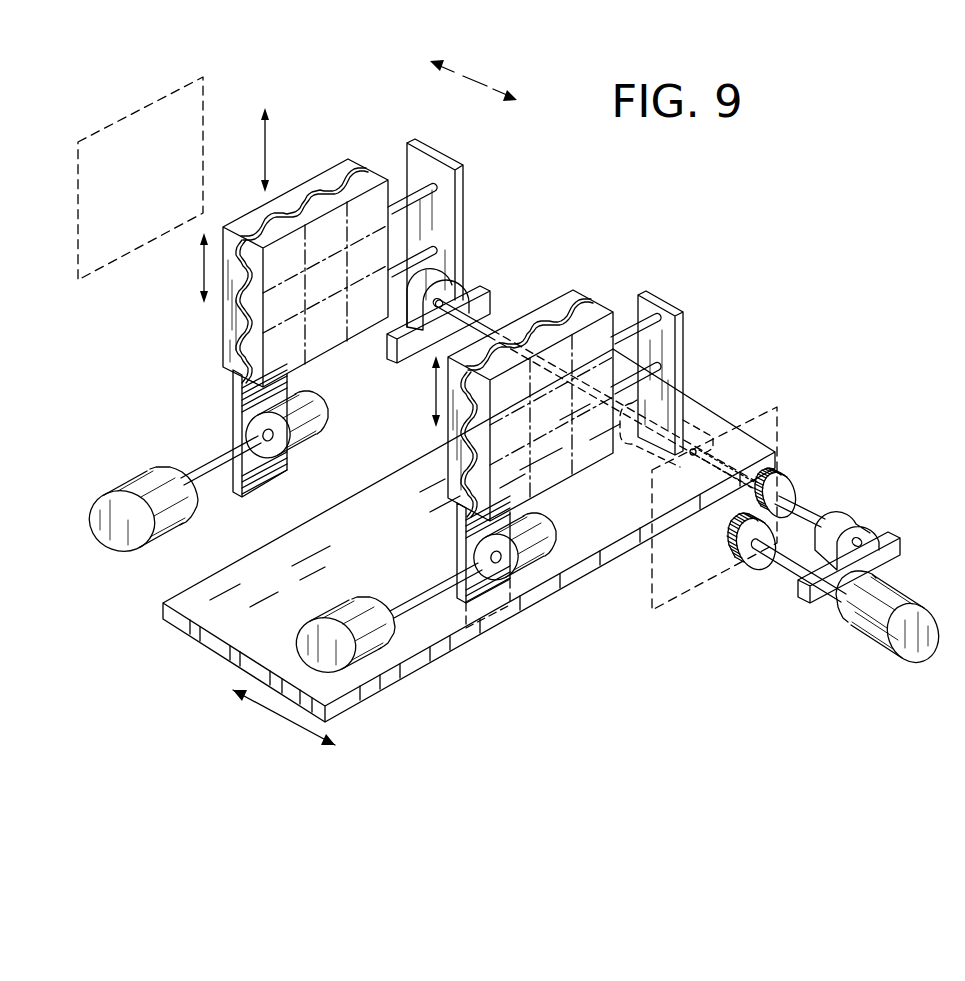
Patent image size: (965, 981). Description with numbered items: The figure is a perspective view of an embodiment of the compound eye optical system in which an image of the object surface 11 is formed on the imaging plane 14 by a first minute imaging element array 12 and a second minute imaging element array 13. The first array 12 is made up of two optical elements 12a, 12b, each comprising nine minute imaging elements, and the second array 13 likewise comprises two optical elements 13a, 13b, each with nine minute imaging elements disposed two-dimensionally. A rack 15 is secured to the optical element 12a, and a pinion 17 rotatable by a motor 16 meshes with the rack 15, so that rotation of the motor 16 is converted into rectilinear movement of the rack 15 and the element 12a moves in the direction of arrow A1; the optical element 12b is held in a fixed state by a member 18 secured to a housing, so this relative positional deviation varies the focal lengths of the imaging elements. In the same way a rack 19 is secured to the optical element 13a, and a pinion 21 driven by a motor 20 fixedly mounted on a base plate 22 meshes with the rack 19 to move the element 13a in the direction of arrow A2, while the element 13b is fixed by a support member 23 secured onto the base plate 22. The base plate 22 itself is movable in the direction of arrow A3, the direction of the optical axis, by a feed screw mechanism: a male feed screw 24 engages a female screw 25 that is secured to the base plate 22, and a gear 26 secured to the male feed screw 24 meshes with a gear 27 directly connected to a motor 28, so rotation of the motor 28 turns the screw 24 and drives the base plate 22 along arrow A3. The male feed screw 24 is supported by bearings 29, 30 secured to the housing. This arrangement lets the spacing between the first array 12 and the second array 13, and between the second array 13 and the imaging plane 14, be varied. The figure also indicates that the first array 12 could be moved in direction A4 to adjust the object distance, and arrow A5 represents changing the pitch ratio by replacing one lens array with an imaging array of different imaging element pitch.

The object surface 11 is at (172, 94).
The first minute imaging element array 12 is at (305, 224).
The optical element 12a is at (327, 173).
The optical element 12b is at (290, 93).
The second minute imaging element array 13 is at (541, 357).
The optical element 13a is at (568, 297).
The optical element 13b is at (553, 227).
The imaging plane 14 is at (757, 423).
The rack 15 is at (232, 400).
The motor 16 is at (120, 540).
The pinion 17 is at (318, 430).
The member 18 is at (440, 150).
The rack 19 is at (457, 540).
The motor 20 is at (340, 615).
The pinion 21 is at (520, 535).
The base plate 22 is at (225, 620).
The support member 23 is at (664, 292).
The male feed screw 24 is at (480, 337).
The female screw 25 is at (690, 427).
The gear 26 is at (780, 472).
The gear 27 is at (741, 572).
The motor 28 is at (860, 630).
The bearing 29 is at (478, 292).
The bearing 30 is at (852, 518).
The arrow A1 is at (200, 270).
The arrow A2 is at (432, 386).
The arrow A3 is at (268, 710).
The arrow A4 is at (473, 78).
The arrow A5 is at (246, 150).